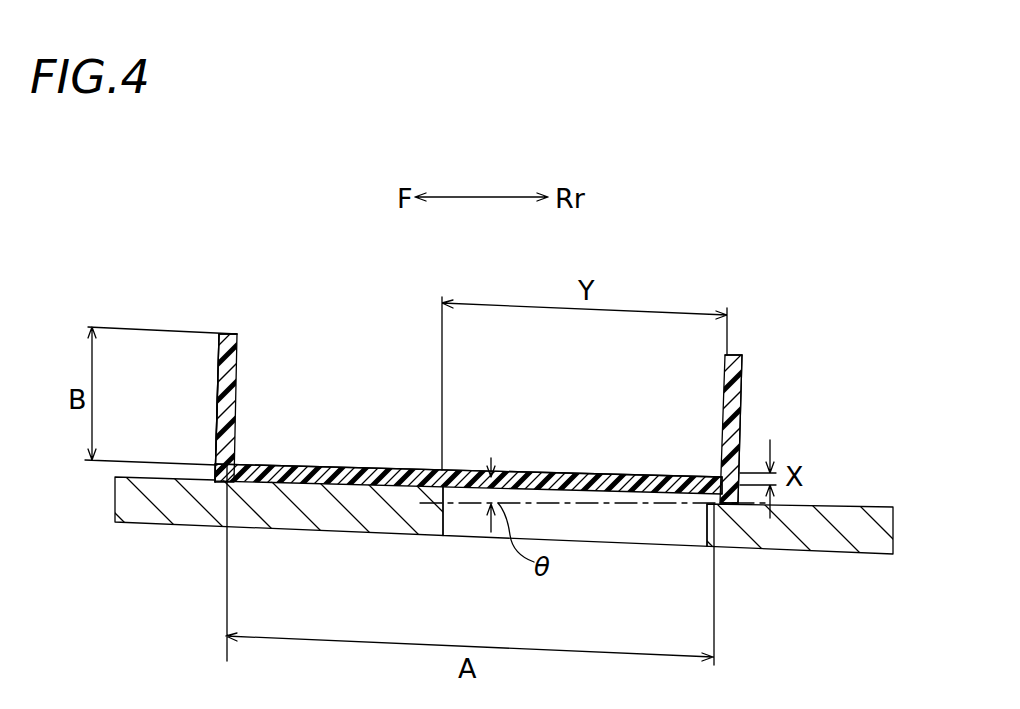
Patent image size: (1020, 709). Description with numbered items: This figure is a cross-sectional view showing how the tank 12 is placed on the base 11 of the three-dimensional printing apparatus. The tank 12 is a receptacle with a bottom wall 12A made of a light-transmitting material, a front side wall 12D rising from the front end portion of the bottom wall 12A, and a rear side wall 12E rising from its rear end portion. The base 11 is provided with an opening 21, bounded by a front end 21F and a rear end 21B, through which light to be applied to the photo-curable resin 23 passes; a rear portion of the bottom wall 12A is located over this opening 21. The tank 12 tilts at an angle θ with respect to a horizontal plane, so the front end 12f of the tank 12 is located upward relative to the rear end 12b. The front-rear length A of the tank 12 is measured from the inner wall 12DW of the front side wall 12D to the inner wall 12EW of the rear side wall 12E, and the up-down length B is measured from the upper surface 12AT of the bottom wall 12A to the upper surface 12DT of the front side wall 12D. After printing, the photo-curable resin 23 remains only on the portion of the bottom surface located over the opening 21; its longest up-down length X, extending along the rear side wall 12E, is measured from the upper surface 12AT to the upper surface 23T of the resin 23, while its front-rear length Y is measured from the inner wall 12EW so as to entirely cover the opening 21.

The base 11 is at (185, 505).
The tank 12 is at (204, 413).
The bottom wall 12A is at (370, 487).
The upper surface of the bottom wall 12AT is at (330, 475).
The front side wall 12D is at (220, 368).
The upper surface of the front side wall 12DT is at (233, 334).
The inner wall of the front side wall 12DW is at (236, 463).
The rear side wall 12E is at (740, 402).
The inner wall of the rear side wall 12EW is at (727, 365).
The rear end of the tank 12b is at (742, 388).
The front end of the tank 12f is at (216, 443).
The opening 21 is at (470, 530).
The front end of the opening 21F is at (457, 528).
The rear end of the opening 21B is at (707, 532).
The photo-curable resin 23 is at (678, 481).
The upper surface of the photo-curable resin 23T is at (722, 500).